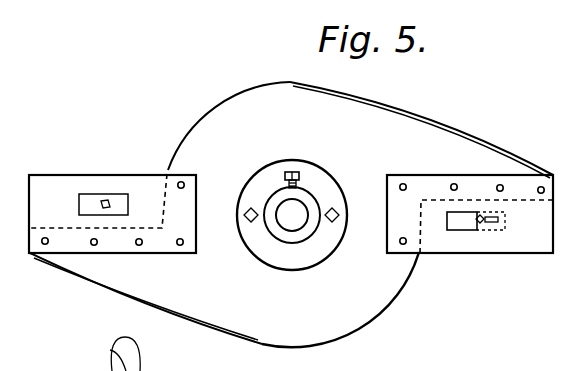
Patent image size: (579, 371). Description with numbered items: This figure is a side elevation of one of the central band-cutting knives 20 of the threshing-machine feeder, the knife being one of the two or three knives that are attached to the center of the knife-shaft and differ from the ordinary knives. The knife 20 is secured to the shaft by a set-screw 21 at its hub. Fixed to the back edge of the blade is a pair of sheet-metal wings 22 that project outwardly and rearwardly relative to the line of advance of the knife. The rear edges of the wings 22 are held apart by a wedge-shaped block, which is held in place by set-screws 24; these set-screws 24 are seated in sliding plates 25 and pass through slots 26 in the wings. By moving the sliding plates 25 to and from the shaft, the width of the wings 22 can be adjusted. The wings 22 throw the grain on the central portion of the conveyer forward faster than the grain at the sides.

The band-cutting knife 20 is at (291, 214).
The set-screw 21 is at (294, 172).
The sheet-metal wing 22 is at (87, 189).
The set-screw 24 is at (497, 223).
The sliding plate 25 is at (465, 231).
The slot 26 is at (499, 217).